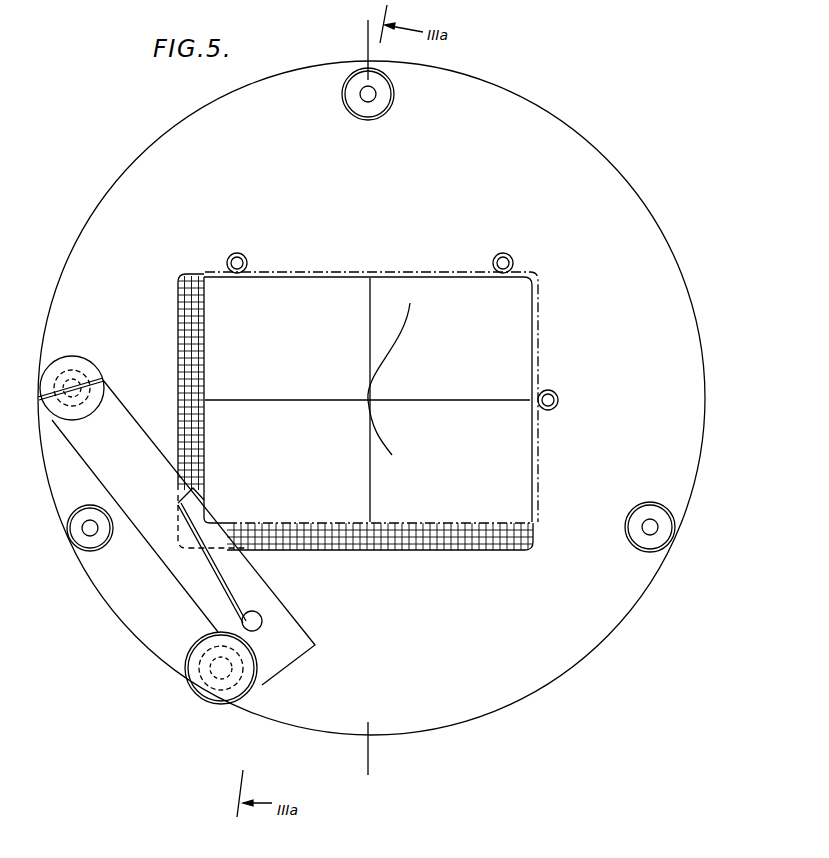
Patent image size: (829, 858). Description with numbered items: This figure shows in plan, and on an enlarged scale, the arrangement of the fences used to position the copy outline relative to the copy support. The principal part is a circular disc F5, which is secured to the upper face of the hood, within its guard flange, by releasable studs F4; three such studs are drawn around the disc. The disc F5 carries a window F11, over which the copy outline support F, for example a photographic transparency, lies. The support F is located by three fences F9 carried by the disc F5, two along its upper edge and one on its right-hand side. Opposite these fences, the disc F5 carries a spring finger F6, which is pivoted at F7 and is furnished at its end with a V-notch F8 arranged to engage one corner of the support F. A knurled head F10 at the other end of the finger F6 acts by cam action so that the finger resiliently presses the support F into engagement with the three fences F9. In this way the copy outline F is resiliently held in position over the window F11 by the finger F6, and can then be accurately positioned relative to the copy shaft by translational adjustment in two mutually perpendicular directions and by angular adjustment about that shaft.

The copy outline support F is at (498, 505).
The releasable studs F4 is at (383, 98).
The disc F5 is at (567, 143).
The spring finger F6 is at (213, 597).
The pivot F7 is at (85, 365).
The V-notch F8 is at (204, 507).
The fences F9 is at (247, 255).
The knurled head F10 is at (213, 692).
The window F11 is at (498, 552).